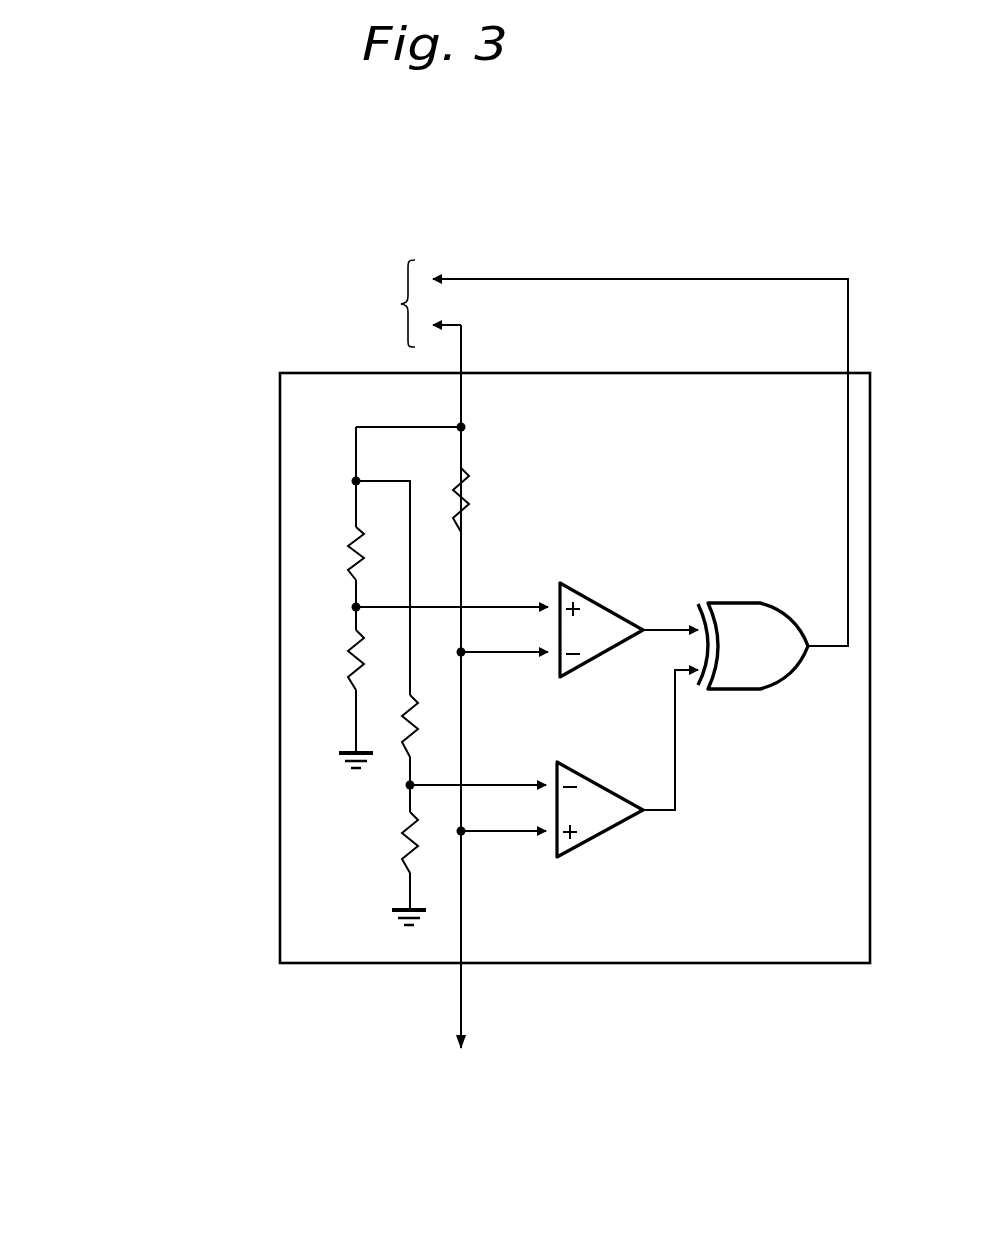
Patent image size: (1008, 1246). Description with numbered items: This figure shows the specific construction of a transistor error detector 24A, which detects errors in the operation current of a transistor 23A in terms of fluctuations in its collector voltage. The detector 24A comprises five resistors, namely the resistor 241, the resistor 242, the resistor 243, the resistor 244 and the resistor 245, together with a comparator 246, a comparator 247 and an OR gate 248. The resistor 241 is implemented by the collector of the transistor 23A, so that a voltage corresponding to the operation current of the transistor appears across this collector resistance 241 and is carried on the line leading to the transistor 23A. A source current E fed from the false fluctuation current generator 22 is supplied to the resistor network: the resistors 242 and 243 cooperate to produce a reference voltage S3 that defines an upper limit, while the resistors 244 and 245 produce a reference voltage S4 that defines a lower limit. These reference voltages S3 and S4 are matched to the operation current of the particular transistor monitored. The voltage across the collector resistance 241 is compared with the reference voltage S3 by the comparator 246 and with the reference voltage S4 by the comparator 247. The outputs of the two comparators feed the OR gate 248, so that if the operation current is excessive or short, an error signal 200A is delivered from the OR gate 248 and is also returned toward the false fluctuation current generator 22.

The resistor 241 is at (488, 493).
The resistor 242 is at (352, 565).
The resistor 243 is at (353, 671).
The resistor 244 is at (406, 739).
The resistor 245 is at (406, 861).
The comparator 246 is at (600, 598).
The comparator 247 is at (588, 773).
The OR gate 248 is at (743, 600).
The reference voltage S3 is at (490, 605).
The reference voltage S4 is at (490, 783).
The source current E is at (464, 342).
The transistor error detector 24A is at (280, 581).
The error signal 200A is at (624, 250).
The false fluctuation current generator 22 is at (224, 303).
The transistor 23A is at (456, 1040).